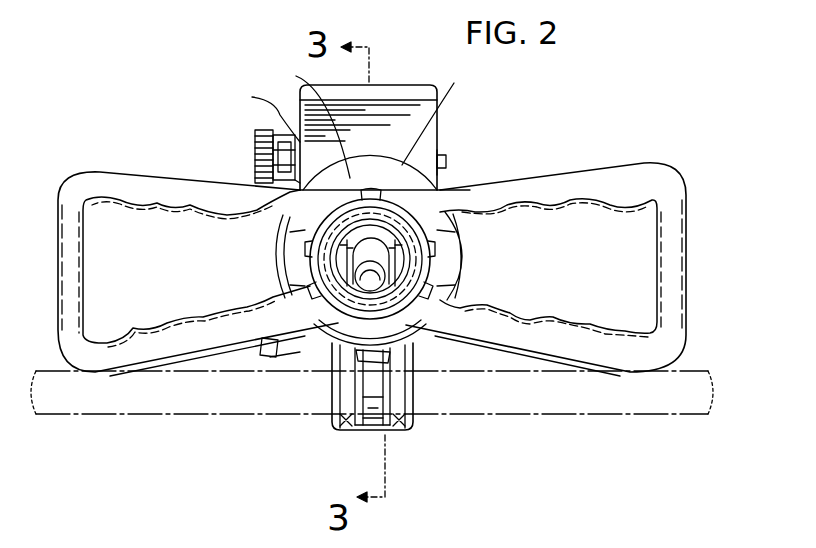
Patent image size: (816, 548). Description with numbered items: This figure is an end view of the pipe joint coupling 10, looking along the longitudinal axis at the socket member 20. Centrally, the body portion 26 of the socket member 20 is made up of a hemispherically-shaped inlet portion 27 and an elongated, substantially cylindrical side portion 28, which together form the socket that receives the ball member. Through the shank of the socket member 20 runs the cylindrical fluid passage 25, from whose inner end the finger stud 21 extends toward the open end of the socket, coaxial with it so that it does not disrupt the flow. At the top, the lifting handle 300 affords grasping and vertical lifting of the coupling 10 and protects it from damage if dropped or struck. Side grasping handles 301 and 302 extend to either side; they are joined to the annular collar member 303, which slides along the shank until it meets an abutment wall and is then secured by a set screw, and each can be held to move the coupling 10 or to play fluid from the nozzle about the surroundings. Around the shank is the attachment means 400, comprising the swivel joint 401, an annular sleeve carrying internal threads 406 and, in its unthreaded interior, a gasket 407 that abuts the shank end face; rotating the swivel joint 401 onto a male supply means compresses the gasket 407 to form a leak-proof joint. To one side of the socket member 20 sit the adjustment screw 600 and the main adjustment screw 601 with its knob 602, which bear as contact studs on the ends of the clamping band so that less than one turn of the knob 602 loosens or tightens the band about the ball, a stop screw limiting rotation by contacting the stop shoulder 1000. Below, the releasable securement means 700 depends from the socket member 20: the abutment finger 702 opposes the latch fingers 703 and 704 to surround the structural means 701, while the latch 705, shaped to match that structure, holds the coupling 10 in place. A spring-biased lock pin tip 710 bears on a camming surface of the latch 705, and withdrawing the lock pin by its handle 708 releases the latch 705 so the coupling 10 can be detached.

The pipe joint coupling 10 is at (419, 166).
The socket member 20 is at (439, 186).
The finger stud 21 is at (375, 280).
The fluid passage 25 is at (344, 265).
The body portion 26 is at (261, 112).
The hemispherically-shaped inlet portion 27 is at (306, 121).
The elongated, substantially cylindrical side portion 28 is at (444, 120).
The lifting handle 300 is at (383, 85).
The side grasping handle 301 is at (644, 163).
The side grasping handle 302 is at (100, 172).
The annular collar member 303 is at (453, 268).
The attachment means 400 is at (432, 248).
The swivel joint 401 is at (450, 232).
The internal threads 406 is at (310, 270).
The gasket 407 is at (343, 265).
The adjustment screw 600 is at (446, 161).
The main adjustment screw 601 is at (256, 150).
The knob 602 is at (262, 130).
The releasable securement means 700 is at (416, 391).
The structural means 701 is at (627, 414).
The abutment finger 702 is at (333, 425).
The latch finger 703 is at (405, 425).
The latch finger 704 is at (345, 425).
The latch 705 is at (378, 425).
The handle 708 is at (264, 355).
The lock pin tip 710 is at (405, 362).
The stop shoulder 1000 is at (233, 218).